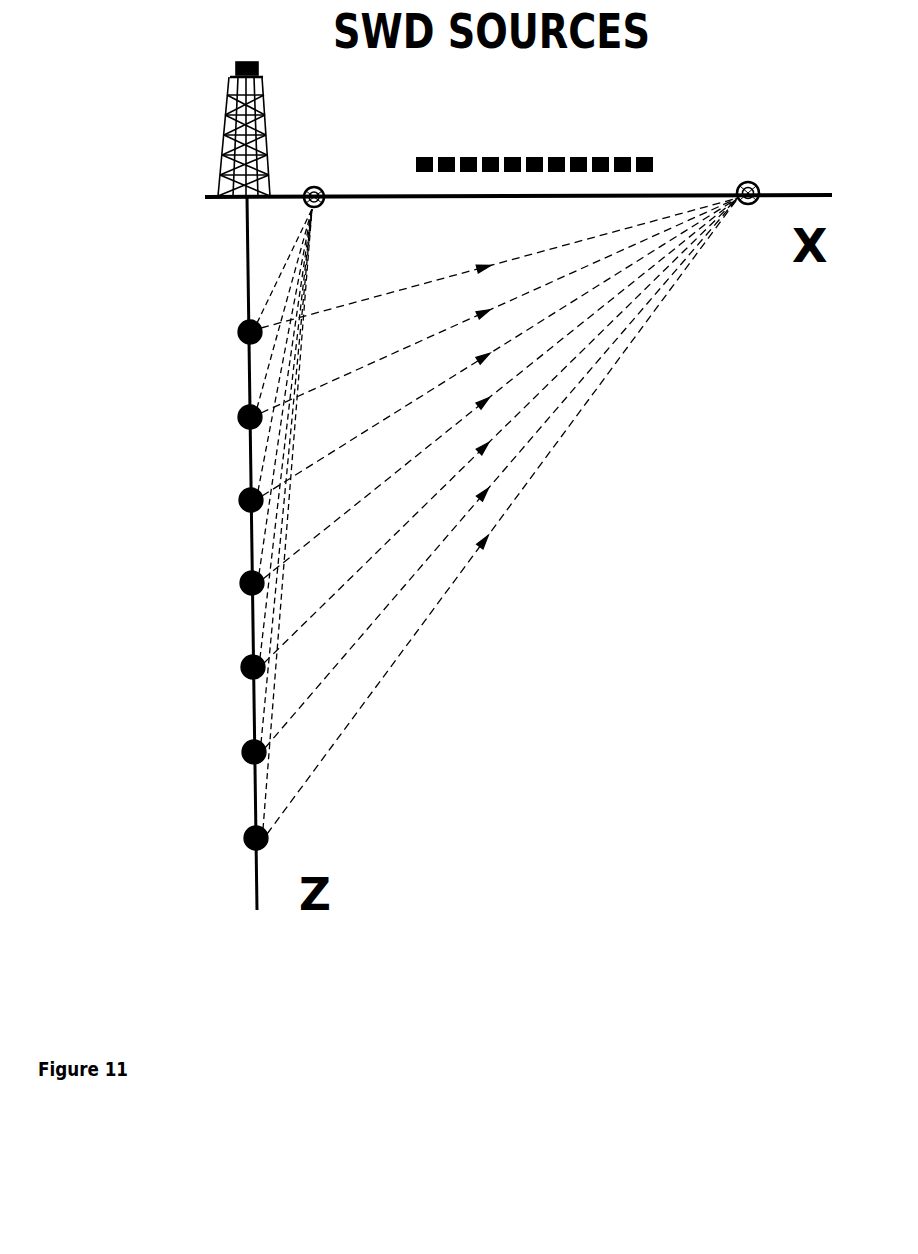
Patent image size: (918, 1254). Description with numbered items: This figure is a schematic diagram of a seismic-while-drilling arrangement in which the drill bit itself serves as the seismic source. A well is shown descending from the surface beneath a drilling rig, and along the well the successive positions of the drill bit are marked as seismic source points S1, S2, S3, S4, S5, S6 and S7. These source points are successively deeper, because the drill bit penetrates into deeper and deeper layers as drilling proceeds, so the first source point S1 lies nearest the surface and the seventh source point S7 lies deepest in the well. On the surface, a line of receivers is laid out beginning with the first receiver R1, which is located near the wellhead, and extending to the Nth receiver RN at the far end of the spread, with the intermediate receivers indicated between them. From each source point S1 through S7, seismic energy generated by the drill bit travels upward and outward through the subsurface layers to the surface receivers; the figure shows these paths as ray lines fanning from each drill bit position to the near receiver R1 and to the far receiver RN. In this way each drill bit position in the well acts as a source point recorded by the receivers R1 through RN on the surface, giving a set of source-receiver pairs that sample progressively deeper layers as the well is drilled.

The seismic source point S1 is at (454, 271).
The seismic source point S2 is at (454, 314).
The seismic source point S3 is at (455, 355).
The seismic source point S4 is at (455, 397).
The seismic source point S5 is at (455, 439).
The seismic source point S6 is at (456, 483).
The seismic source point S7 is at (456, 526).
The receiver R1 is at (318, 171).
The receiver RN is at (759, 167).